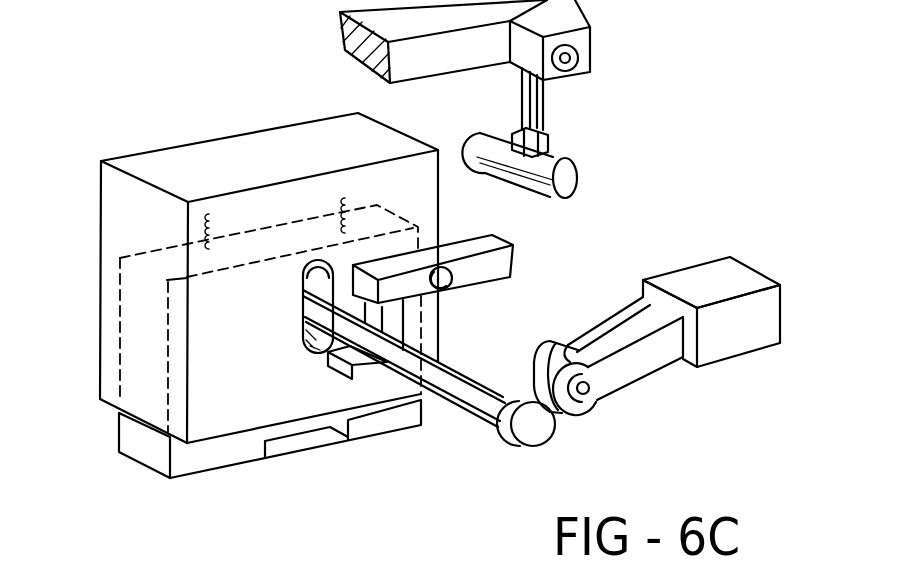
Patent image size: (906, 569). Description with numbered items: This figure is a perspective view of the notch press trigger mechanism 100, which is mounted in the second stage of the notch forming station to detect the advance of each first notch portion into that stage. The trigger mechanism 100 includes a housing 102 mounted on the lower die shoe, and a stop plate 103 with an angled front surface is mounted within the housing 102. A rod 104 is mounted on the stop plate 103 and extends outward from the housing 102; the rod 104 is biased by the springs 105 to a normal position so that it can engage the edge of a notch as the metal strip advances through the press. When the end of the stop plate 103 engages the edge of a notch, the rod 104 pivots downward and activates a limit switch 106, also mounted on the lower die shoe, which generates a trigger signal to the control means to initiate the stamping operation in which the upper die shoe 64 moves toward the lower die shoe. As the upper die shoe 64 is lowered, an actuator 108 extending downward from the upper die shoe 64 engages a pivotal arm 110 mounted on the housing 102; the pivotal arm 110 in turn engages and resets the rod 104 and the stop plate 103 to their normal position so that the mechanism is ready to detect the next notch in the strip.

The notch press trigger mechanism 100 is at (145, 69).
The housing 102 is at (158, 155).
The stop plate 103 is at (132, 440).
The rod 104 is at (461, 393).
The springs 105 is at (205, 230).
The limit switch 106 is at (693, 272).
The actuator 108 is at (572, 172).
The pivotal arm 110 is at (513, 260).
The upper die shoe 64 is at (427, 62).